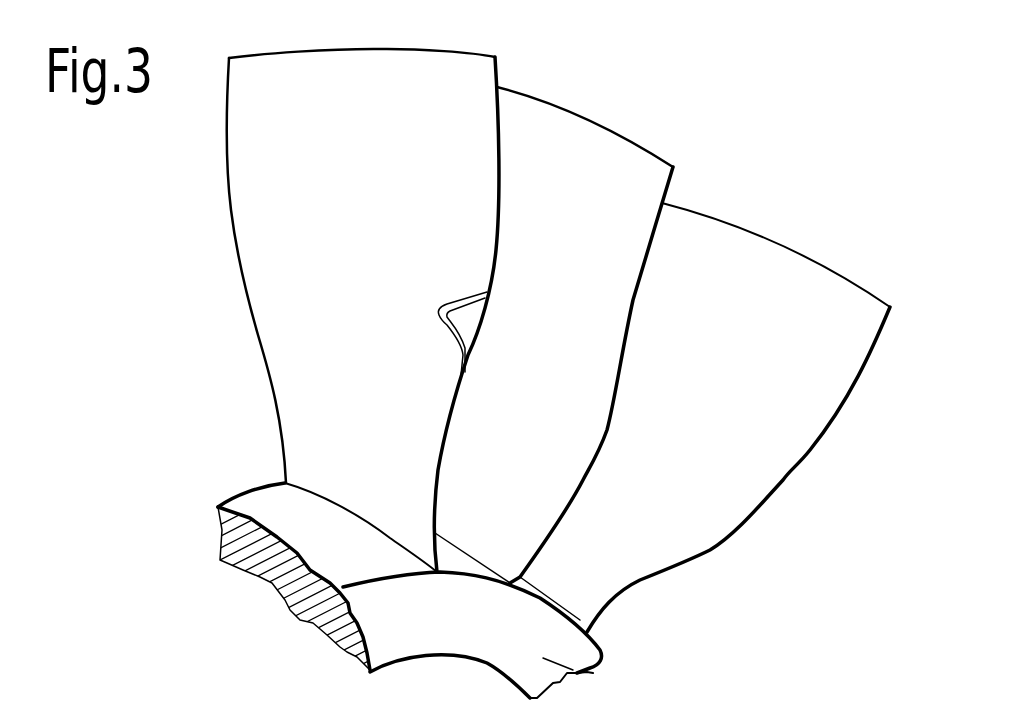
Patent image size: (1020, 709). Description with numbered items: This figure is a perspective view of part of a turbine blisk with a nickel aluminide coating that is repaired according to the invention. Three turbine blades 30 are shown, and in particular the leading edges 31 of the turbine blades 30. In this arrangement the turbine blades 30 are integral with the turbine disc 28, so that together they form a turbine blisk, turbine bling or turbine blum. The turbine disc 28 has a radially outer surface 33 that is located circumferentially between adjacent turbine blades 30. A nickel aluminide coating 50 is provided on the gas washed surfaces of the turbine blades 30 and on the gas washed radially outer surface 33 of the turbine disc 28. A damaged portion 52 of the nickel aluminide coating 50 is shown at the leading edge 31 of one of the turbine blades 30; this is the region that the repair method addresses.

The turbine disc 28 is at (593, 673).
The turbine blade 30 is at (470, 85).
The leading edge 31 is at (497, 247).
The radially outer surface 33 is at (245, 500).
The nickel aluminide coating 50 is at (250, 198).
The damaged portion 52 is at (402, 303).